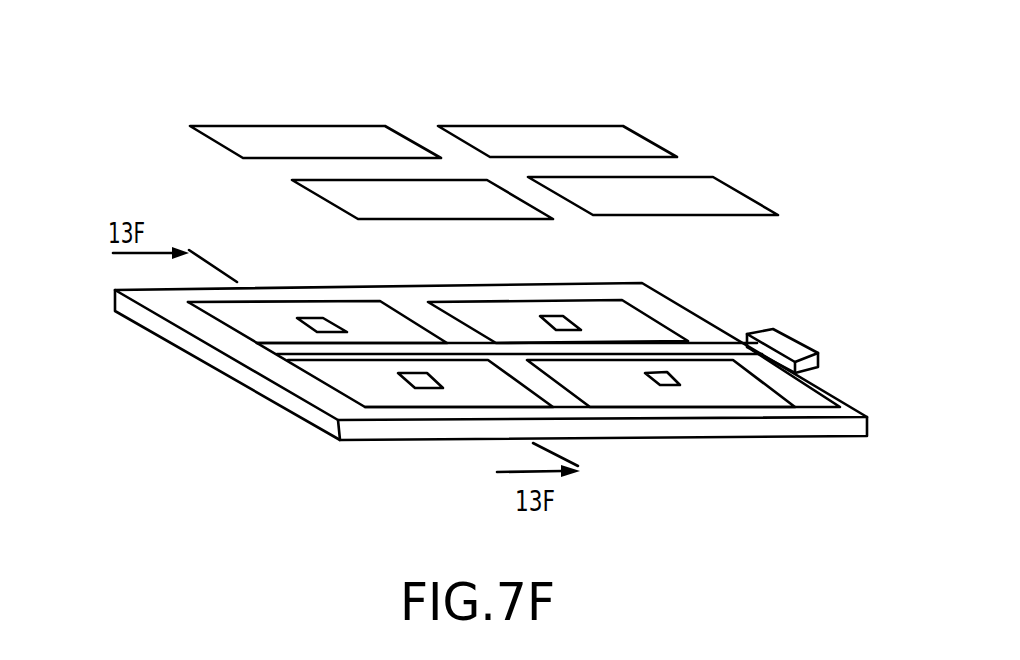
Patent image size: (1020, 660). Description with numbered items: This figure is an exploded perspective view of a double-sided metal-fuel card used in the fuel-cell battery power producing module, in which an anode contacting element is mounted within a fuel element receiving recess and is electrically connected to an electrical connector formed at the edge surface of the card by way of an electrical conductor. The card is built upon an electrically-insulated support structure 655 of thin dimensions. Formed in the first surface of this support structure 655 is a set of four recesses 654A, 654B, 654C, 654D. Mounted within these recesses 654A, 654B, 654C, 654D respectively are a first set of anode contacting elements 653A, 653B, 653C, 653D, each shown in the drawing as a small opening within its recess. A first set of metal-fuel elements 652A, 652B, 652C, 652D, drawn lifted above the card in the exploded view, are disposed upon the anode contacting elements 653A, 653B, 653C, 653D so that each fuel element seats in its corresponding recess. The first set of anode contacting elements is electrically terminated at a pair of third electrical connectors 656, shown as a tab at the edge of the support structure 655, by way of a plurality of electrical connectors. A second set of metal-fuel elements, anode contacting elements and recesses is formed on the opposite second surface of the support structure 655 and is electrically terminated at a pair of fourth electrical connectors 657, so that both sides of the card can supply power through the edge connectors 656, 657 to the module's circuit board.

The metal-fuel element 652A is at (313, 192).
The metal-fuel element 652B is at (292, 128).
The metal-fuel element 652C is at (557, 120).
The metal-fuel element 652D is at (723, 195).
The anode contacting element 653A is at (422, 388).
The anode contacting element 653B is at (303, 320).
The anode contacting element 653C is at (560, 320).
The anode contacting element 653D is at (670, 383).
The recess 654A is at (352, 386).
The recess 654B is at (225, 318).
The recess 654C is at (653, 322).
The recess 654D is at (750, 392).
The electrically-insulated support structure 655 is at (362, 447).
The third electrical connectors 656 is at (800, 340).
The fourth electrical connectors 657 is at (827, 388).